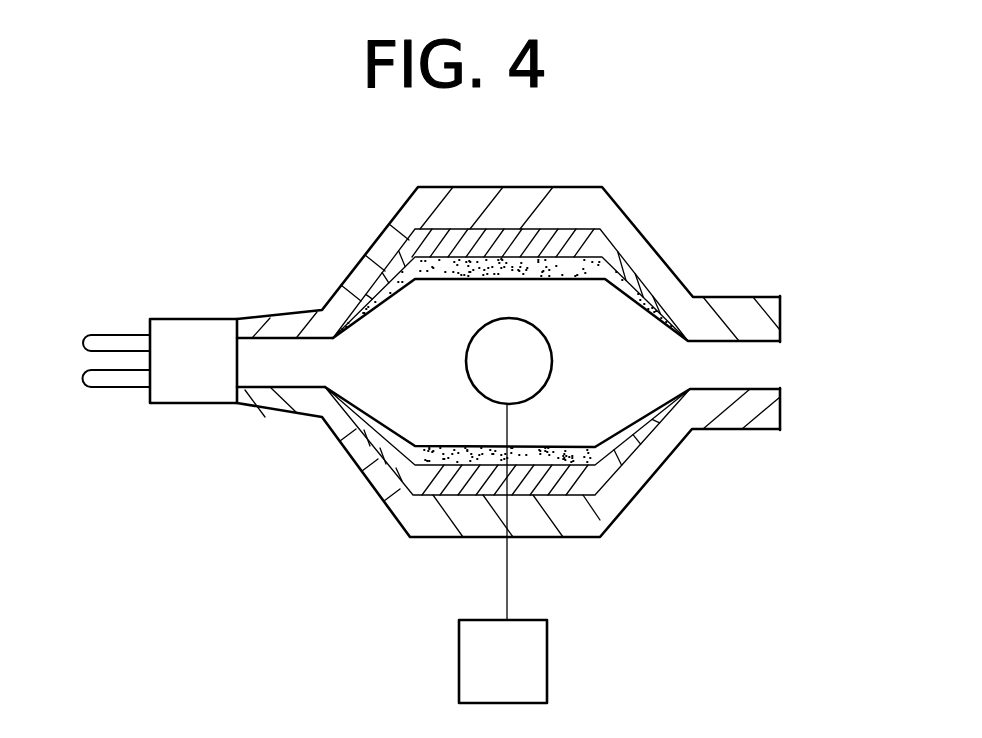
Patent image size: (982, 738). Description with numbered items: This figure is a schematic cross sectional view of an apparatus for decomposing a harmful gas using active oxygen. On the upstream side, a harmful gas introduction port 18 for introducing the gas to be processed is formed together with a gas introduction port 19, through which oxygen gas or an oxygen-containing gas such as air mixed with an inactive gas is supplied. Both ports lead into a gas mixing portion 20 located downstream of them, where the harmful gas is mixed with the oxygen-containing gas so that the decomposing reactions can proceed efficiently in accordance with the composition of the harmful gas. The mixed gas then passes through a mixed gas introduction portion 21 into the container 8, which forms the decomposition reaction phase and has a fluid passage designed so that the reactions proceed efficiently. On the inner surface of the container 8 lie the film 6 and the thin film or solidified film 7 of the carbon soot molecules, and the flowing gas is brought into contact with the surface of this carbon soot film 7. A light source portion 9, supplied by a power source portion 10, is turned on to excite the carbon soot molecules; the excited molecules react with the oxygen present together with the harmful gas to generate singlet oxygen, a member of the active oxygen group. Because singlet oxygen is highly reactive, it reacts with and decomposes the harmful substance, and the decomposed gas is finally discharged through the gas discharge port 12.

The film 6 is at (597, 245).
The thin film or solidified film of the carbon soot molecules 7 is at (615, 278).
The container 8 is at (598, 208).
The light source portion 9 is at (527, 355).
The power source portion 10 is at (530, 648).
The gas discharge port 12 is at (764, 366).
The harmful gas introduction port 18 is at (107, 342).
The gas introduction port 19 is at (103, 380).
The gas mixing portion 20 is at (185, 337).
The mixed gas introduction portion 21 is at (258, 362).